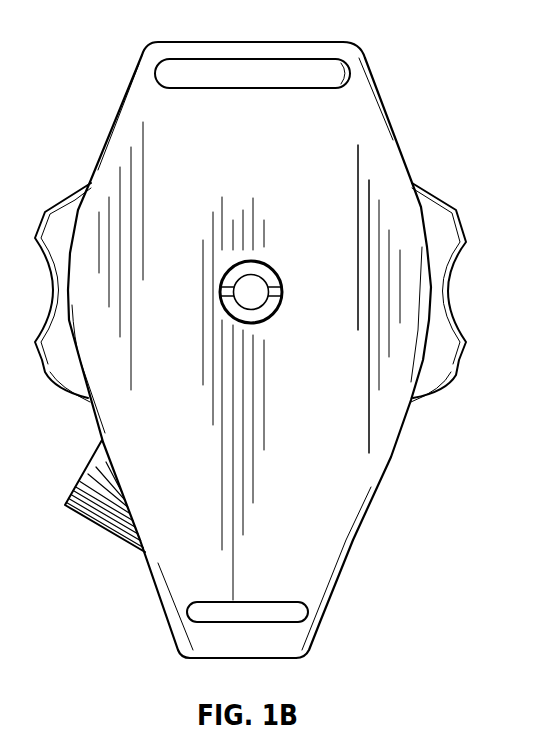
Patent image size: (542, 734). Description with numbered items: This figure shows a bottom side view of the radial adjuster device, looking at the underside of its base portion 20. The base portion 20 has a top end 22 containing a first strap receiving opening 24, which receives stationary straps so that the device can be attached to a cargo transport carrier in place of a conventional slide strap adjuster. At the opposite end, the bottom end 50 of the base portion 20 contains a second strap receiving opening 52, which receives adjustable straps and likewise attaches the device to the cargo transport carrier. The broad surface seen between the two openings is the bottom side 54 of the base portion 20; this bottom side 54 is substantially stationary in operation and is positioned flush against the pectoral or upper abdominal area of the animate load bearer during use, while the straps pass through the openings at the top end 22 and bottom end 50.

The base portion 20 is at (98, 155).
The top end 22 is at (249, 336).
The first strap receiving opening 24 is at (173, 75).
The bottom end 50 is at (175, 637).
The second strap receiving opening 52 is at (295, 612).
The bottom side 54 is at (370, 178).